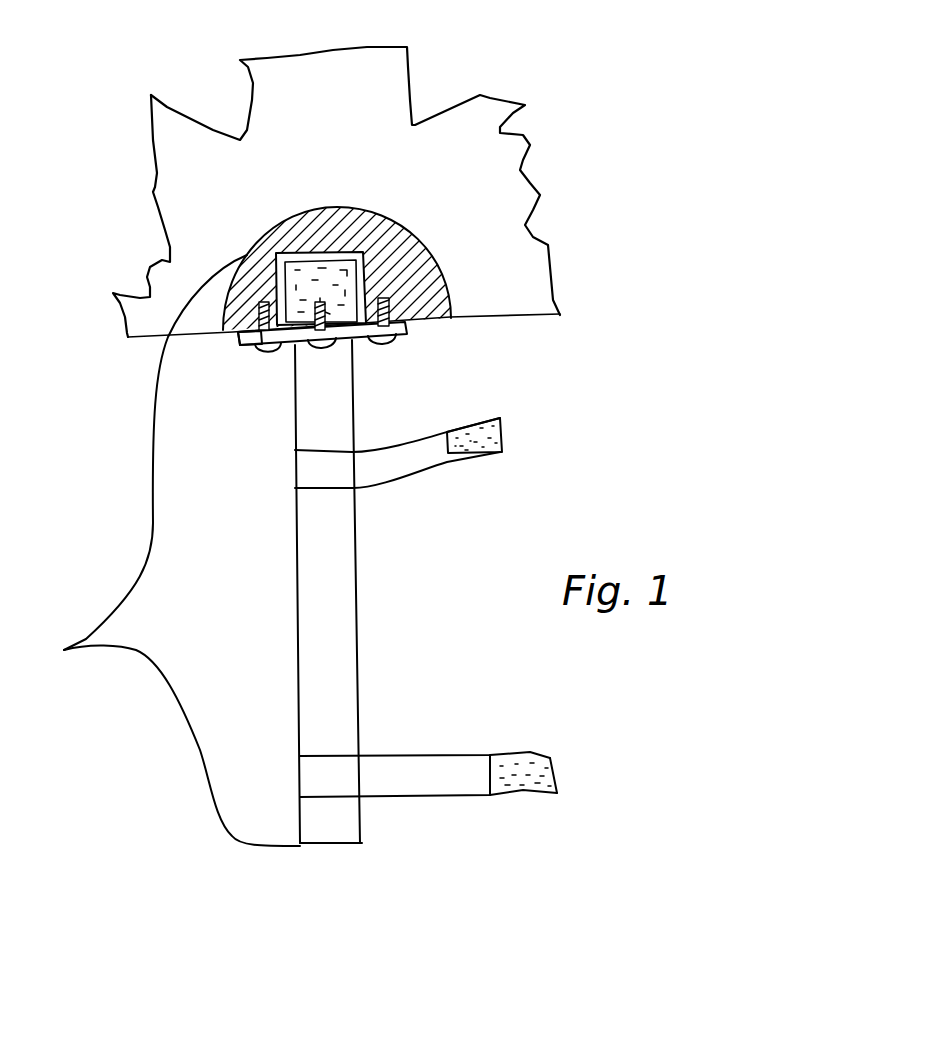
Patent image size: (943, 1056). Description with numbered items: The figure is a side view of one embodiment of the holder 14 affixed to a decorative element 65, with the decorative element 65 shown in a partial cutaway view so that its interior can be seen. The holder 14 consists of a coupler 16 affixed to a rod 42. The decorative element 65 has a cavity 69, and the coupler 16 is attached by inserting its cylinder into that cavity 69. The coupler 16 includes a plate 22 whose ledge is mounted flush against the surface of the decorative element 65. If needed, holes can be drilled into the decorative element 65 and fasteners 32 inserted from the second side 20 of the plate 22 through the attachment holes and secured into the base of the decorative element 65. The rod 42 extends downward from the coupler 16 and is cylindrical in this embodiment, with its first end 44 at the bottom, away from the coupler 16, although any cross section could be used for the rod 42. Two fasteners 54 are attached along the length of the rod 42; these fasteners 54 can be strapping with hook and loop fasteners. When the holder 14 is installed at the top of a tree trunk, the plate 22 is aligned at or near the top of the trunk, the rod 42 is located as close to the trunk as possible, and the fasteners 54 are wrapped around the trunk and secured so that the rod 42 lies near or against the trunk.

The holder 14 is at (64, 650).
The coupler 16 is at (423, 333).
The second side 20 is at (363, 347).
The plate 22 is at (233, 345).
The fasteners 32 is at (263, 352).
The rod 42 is at (357, 713).
The first end 44 is at (353, 850).
The fasteners 54 is at (503, 425).
The decorative element 65 is at (497, 97).
The cavity 69 is at (357, 248).